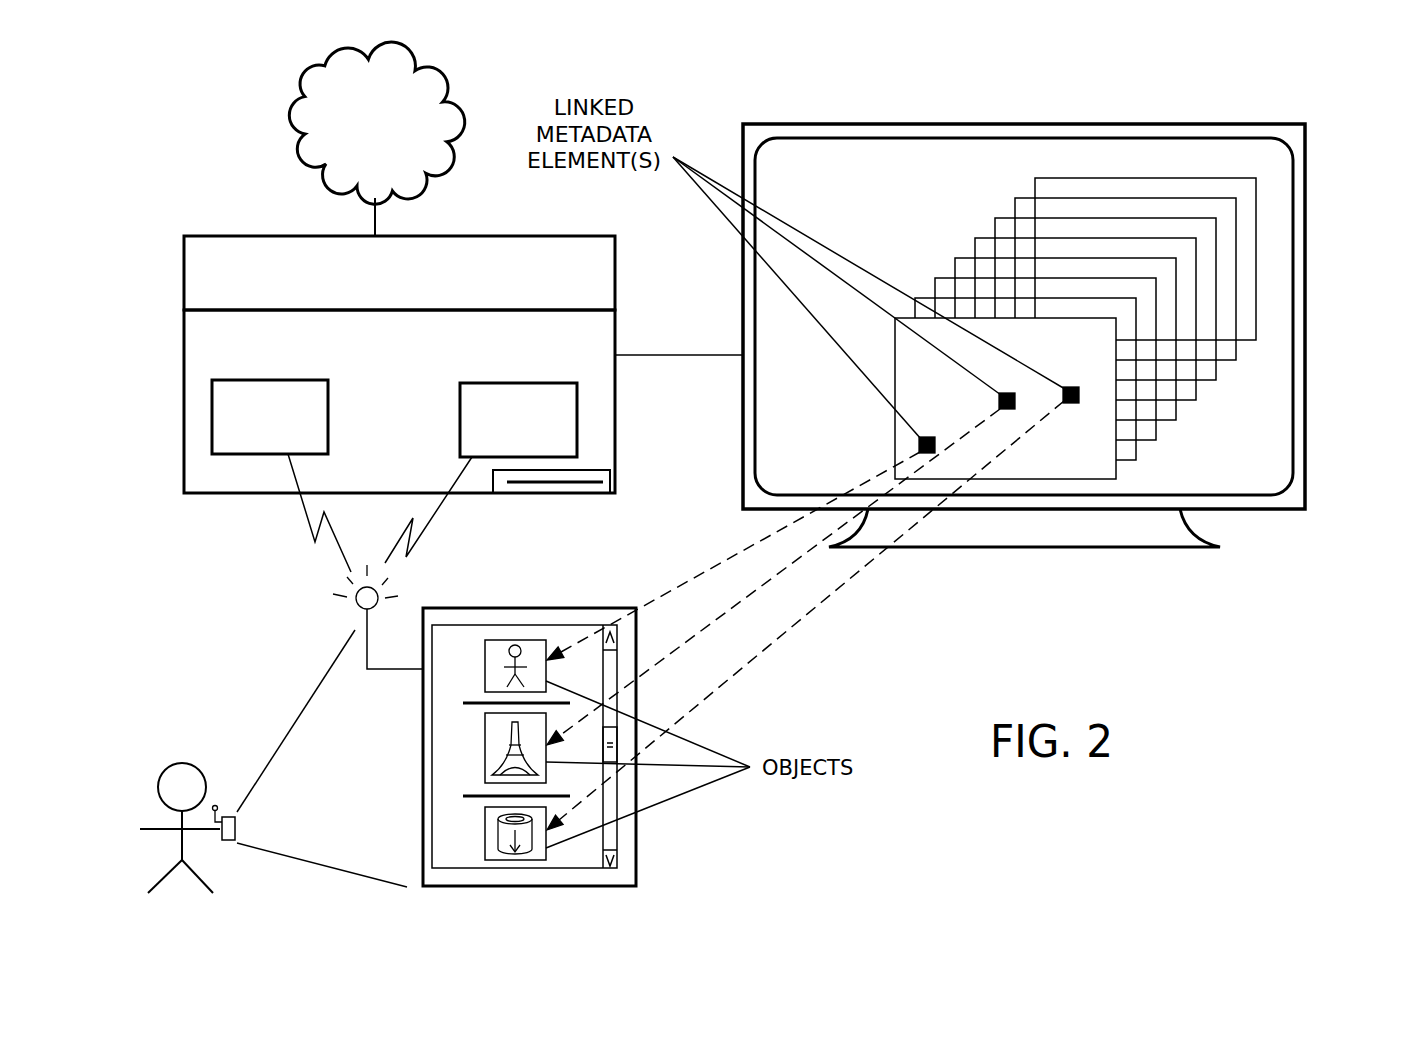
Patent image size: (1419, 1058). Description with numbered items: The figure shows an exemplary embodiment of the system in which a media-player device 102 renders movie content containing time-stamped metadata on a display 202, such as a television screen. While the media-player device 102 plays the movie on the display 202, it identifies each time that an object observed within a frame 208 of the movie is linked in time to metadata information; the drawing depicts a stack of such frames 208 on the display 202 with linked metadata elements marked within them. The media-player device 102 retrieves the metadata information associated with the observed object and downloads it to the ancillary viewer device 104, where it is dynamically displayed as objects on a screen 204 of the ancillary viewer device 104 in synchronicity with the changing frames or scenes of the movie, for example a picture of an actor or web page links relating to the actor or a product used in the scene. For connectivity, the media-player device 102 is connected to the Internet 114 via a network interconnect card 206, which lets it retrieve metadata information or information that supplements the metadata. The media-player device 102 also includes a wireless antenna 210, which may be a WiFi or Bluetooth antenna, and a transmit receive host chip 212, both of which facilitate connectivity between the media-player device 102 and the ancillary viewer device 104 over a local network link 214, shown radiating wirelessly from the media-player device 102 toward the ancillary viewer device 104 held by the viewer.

The Internet 114 is at (453, 93).
The network interconnect card (NIC) 206 is at (198, 235).
The media-player device 102 is at (615, 453).
The wireless antenna 210 is at (212, 418).
The transmit receive (TxRx) host chip 212 is at (577, 422).
The local network link 214 is at (300, 511).
The ancillary viewer device 104 is at (237, 835).
The screen 204 is at (618, 840).
The display 202 is at (1305, 425).
The frame 208 is at (1222, 228).